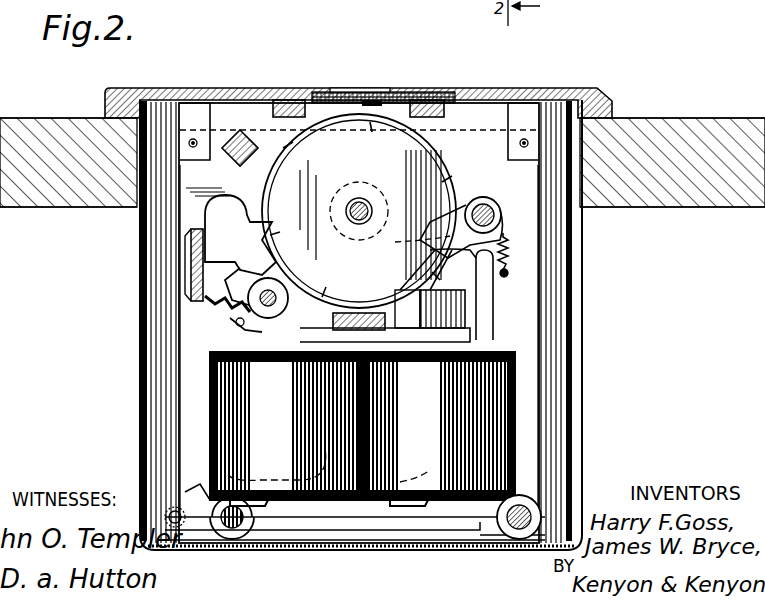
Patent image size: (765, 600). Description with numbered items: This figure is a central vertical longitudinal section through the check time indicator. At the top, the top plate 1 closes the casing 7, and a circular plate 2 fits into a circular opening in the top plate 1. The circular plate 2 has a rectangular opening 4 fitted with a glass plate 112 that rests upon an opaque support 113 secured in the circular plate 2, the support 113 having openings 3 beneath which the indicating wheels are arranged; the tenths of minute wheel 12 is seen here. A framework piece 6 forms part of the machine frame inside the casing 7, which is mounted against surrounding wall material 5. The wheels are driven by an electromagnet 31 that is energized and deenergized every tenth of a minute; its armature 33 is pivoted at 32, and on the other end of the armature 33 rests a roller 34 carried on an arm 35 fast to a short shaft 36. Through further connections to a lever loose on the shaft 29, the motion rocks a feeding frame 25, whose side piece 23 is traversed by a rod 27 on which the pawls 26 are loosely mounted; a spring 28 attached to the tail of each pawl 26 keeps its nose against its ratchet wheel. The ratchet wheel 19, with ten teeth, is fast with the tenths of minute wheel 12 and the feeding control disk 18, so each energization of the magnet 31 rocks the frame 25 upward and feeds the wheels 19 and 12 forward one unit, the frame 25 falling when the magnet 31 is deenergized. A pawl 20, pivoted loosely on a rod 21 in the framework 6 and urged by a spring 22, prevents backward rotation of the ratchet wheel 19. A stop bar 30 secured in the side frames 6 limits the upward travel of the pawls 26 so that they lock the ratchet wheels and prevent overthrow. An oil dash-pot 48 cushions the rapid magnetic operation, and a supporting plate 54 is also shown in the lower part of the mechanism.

The top plate 1 is at (160, 90).
The circular plate 2 is at (266, 87).
The openings 3 is at (372, 99).
The rectangular opening 4 is at (360, 89).
The wall 5 is at (33, 122).
The framework piece 6 is at (190, 206).
The casing 7 is at (583, 263).
The tenths of minute wheel 12 is at (452, 184).
The feeding control disk 18 is at (447, 197).
The ratchet wheel 19 is at (405, 156).
The pawl 20 is at (462, 252).
The rod 21 is at (494, 210).
The spring 22 is at (509, 251).
The side piece 23 is at (207, 200).
The feeding frame 25 is at (190, 256).
The pawl 26 is at (252, 229).
The rod 27 is at (284, 306).
The spring 28 is at (232, 310).
The shaft 29 is at (360, 218).
The stop bar 30 is at (254, 146).
The electromagnet 31 is at (362, 429).
The pivot 32 is at (518, 534).
The armature 33 is at (380, 544).
The roller 34 is at (172, 510).
The arm 35 is at (198, 490).
The short shaft 36 is at (236, 528).
The oil dash-pot 48 is at (442, 310).
The plate 54 is at (390, 332).
The glass plate 112 is at (336, 95).
The opaque support 113 is at (418, 90).